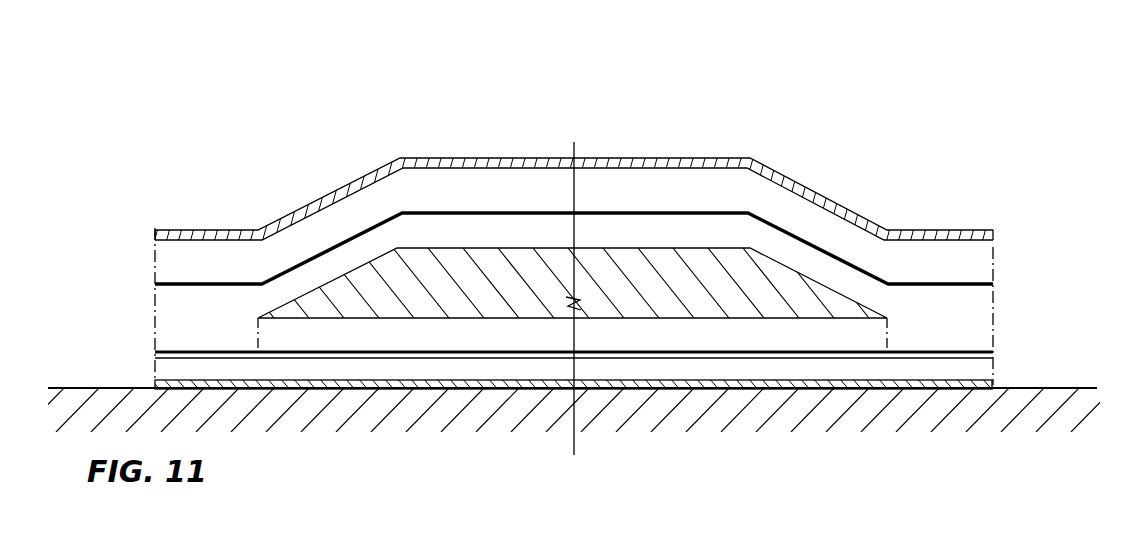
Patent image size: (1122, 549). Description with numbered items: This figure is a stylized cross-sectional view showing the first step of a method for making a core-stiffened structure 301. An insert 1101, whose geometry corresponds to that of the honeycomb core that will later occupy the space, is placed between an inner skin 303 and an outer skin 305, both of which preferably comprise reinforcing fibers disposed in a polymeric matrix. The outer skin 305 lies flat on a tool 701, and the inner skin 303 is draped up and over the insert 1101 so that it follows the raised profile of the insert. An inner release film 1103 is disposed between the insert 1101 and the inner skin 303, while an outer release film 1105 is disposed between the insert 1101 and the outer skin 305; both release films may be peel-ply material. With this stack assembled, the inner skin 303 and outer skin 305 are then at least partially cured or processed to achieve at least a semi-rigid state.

The core-stiffened structure 301 is at (952, 146).
The inner skin 303 is at (407, 158).
The outer skin 305 is at (992, 381).
The tool 701 is at (967, 427).
The insert 1101 is at (676, 296).
The inner release film 1103 is at (987, 284).
The outer release film 1105 is at (173, 352).